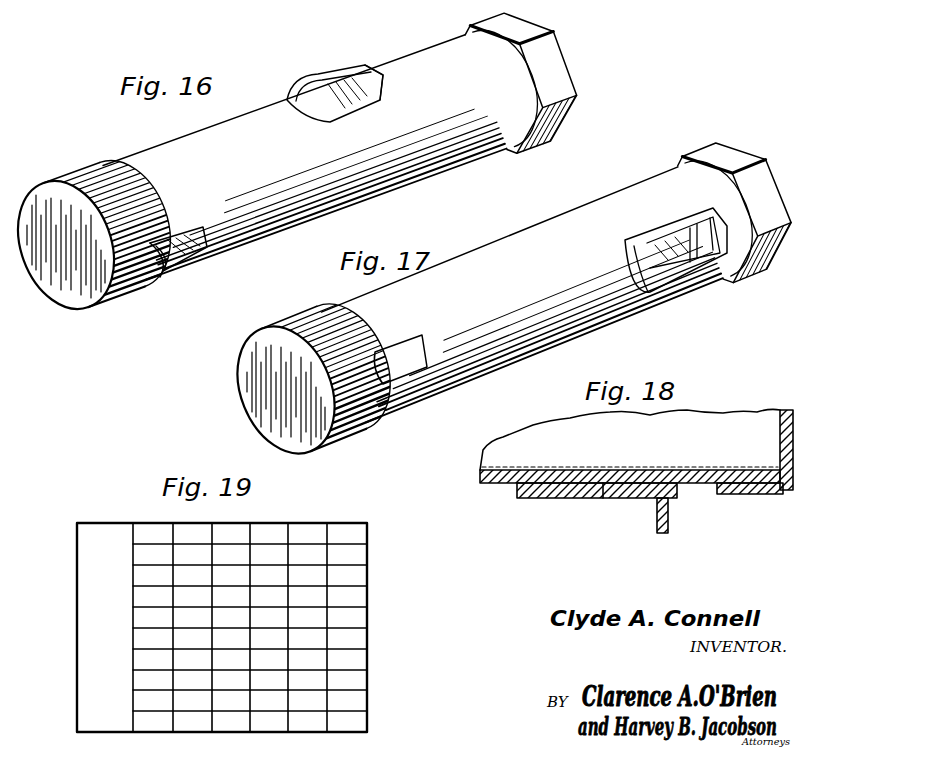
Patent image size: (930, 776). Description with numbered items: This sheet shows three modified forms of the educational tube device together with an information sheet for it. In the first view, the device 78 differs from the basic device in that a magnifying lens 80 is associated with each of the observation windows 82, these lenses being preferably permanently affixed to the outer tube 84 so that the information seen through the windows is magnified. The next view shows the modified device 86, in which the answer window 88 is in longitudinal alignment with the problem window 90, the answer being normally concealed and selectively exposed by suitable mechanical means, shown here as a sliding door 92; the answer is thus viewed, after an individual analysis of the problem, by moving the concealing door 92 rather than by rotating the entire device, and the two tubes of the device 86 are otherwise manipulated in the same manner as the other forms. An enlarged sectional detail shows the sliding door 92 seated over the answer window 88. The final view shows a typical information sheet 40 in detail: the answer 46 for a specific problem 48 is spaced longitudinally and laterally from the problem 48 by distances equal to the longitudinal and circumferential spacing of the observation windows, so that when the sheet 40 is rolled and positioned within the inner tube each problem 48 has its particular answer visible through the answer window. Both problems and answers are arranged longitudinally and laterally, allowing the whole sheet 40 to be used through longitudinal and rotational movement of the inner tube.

In FIG. 16, the device 78 is at (294, 162).
In FIG. 16, the magnifying lens 80 is at (266, 180).
In FIG. 16, the observation window 82 is at (392, 91).
In FIG. 16, the outer tube 84 is at (325, 186).
In FIG. 17, the modified device 86 is at (511, 299).
In FIG. 17, the answer window 88 is at (672, 249).
In FIG. 18, the answer window 88 is at (630, 462).
In FIG. 17, the problem window 90 is at (413, 350).
In FIG. 17, the sliding door 92 is at (693, 224).
In FIG. 18, the sliding door 92 is at (650, 508).
In FIG. 19, the information sheet 40 is at (208, 643).
In FIG. 19, the answer 46 is at (264, 627).
In FIG. 19, the problem 48 is at (225, 628).